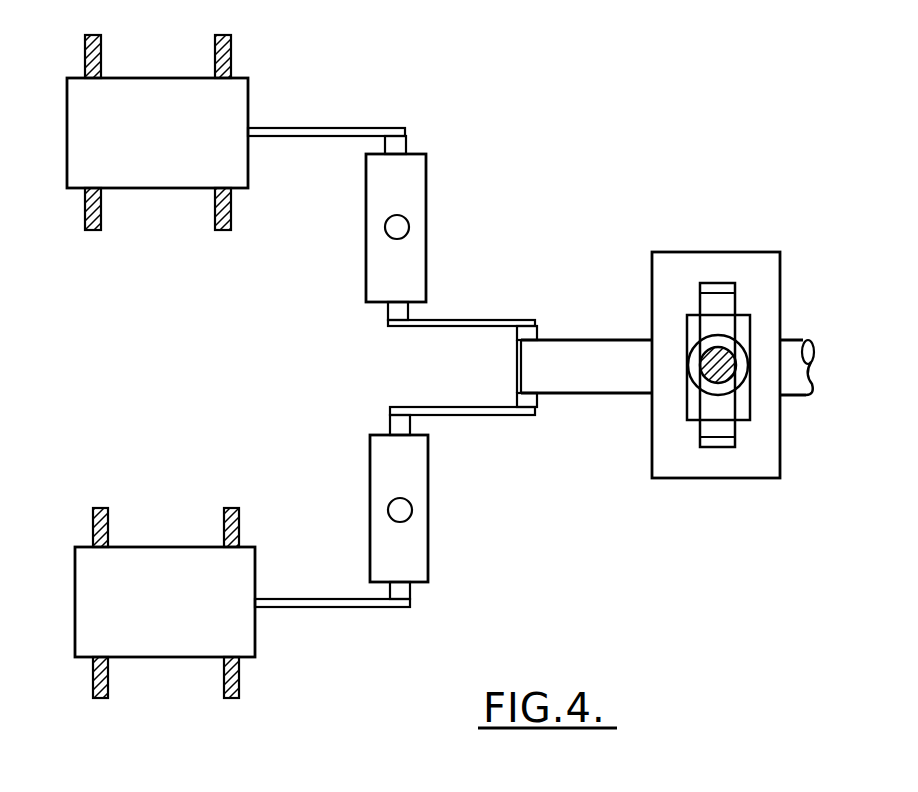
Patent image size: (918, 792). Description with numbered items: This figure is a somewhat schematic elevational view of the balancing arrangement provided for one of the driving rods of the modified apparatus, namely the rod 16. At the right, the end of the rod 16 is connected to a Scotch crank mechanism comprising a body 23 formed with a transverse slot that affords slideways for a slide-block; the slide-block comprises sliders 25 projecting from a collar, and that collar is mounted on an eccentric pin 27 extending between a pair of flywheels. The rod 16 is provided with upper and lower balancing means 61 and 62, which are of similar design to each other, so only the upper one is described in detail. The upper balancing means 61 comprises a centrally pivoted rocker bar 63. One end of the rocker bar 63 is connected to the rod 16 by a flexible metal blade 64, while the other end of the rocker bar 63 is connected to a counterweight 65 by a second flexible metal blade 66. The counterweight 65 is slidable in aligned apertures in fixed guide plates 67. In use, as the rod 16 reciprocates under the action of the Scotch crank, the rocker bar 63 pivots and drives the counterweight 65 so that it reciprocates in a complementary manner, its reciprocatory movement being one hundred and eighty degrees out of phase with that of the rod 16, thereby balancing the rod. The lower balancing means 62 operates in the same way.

The rod 16 is at (602, 360).
The body 23 is at (768, 260).
The sliders 25 is at (723, 300).
The eccentric pin 27 is at (735, 375).
The upper balancing means 61 is at (387, 85).
The lower balancing means 62 is at (303, 655).
The rocker bar 63 is at (413, 172).
The flexible metal blade 64 is at (483, 318).
The counterweight 65 is at (149, 172).
The flexible metal blade 66 is at (322, 130).
The fixed guide plates 67 is at (223, 42).